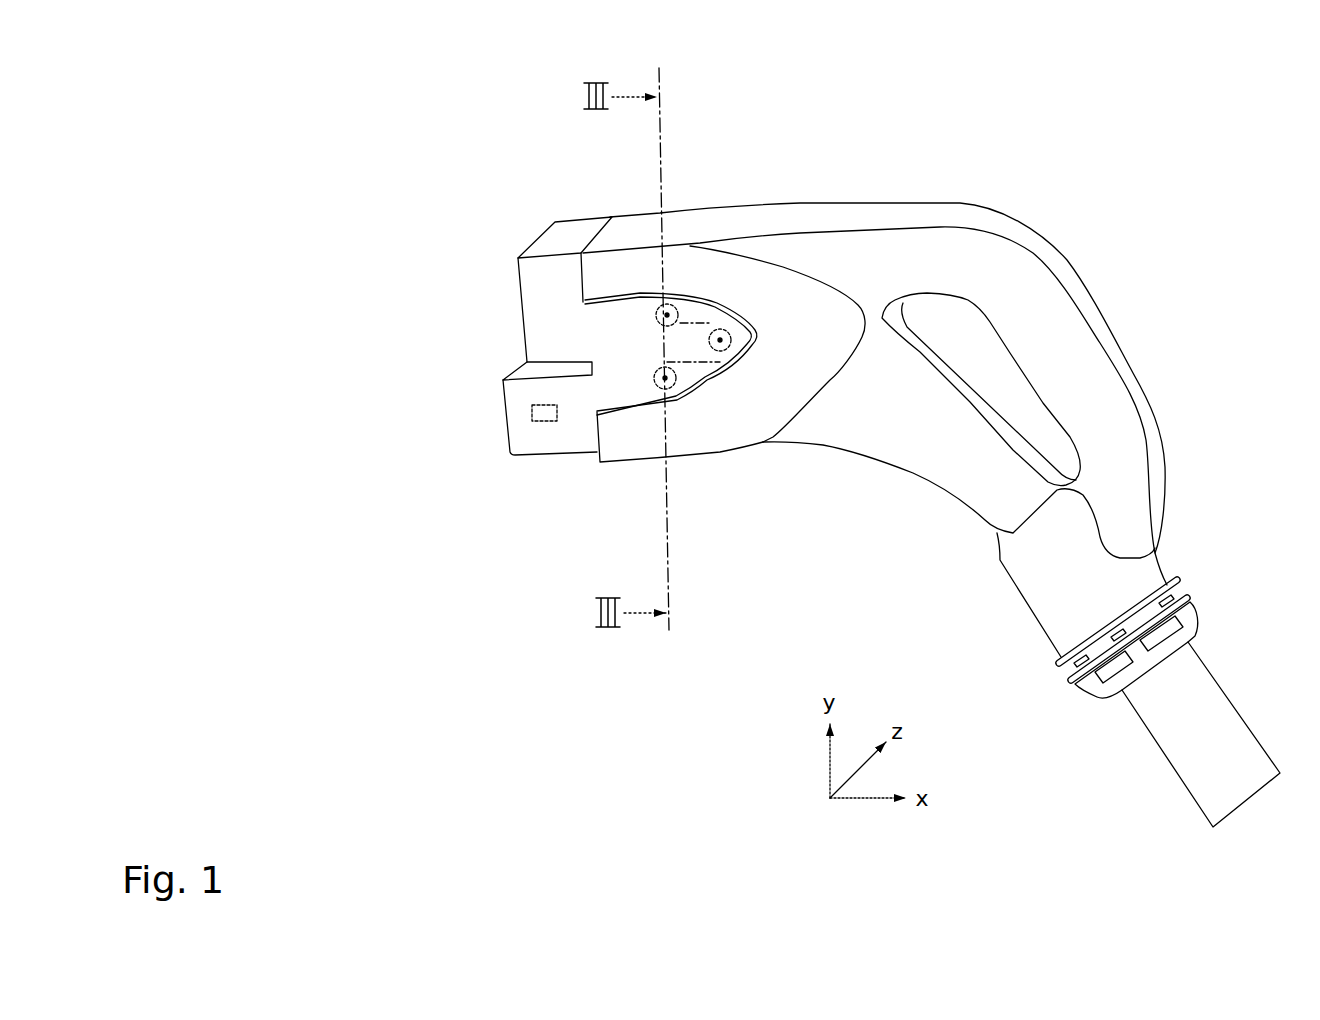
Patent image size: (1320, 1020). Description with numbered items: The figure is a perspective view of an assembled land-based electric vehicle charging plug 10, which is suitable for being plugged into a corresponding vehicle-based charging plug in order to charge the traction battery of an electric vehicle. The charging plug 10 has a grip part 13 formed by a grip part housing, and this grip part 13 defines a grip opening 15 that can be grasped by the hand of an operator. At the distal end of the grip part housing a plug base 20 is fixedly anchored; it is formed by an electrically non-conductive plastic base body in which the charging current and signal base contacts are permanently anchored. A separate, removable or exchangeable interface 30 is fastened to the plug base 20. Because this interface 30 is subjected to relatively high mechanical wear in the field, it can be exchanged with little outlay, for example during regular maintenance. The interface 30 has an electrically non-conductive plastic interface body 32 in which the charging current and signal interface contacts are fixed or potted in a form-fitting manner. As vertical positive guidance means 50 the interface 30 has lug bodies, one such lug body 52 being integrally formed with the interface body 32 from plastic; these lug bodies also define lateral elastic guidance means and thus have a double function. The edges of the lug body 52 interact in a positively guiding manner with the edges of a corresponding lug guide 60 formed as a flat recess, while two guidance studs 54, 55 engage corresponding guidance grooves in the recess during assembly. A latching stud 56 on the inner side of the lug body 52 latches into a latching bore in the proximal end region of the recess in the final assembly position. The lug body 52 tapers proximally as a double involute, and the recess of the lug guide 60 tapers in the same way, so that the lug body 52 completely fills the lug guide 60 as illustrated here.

The charging plug 10 is at (943, 117).
The grip part 13 is at (1088, 308).
The grip opening 15 is at (962, 393).
The plug base 20 is at (702, 222).
The interface 30 is at (575, 233).
The interface body 32 is at (563, 302).
The vertical positive guidance means 50 is at (622, 403).
The lug body 52 is at (637, 367).
The guidance stud 54 is at (667, 313).
The guidance stud 55 is at (666, 380).
The latching stud 56 is at (721, 342).
The lug guide 60 is at (643, 421).